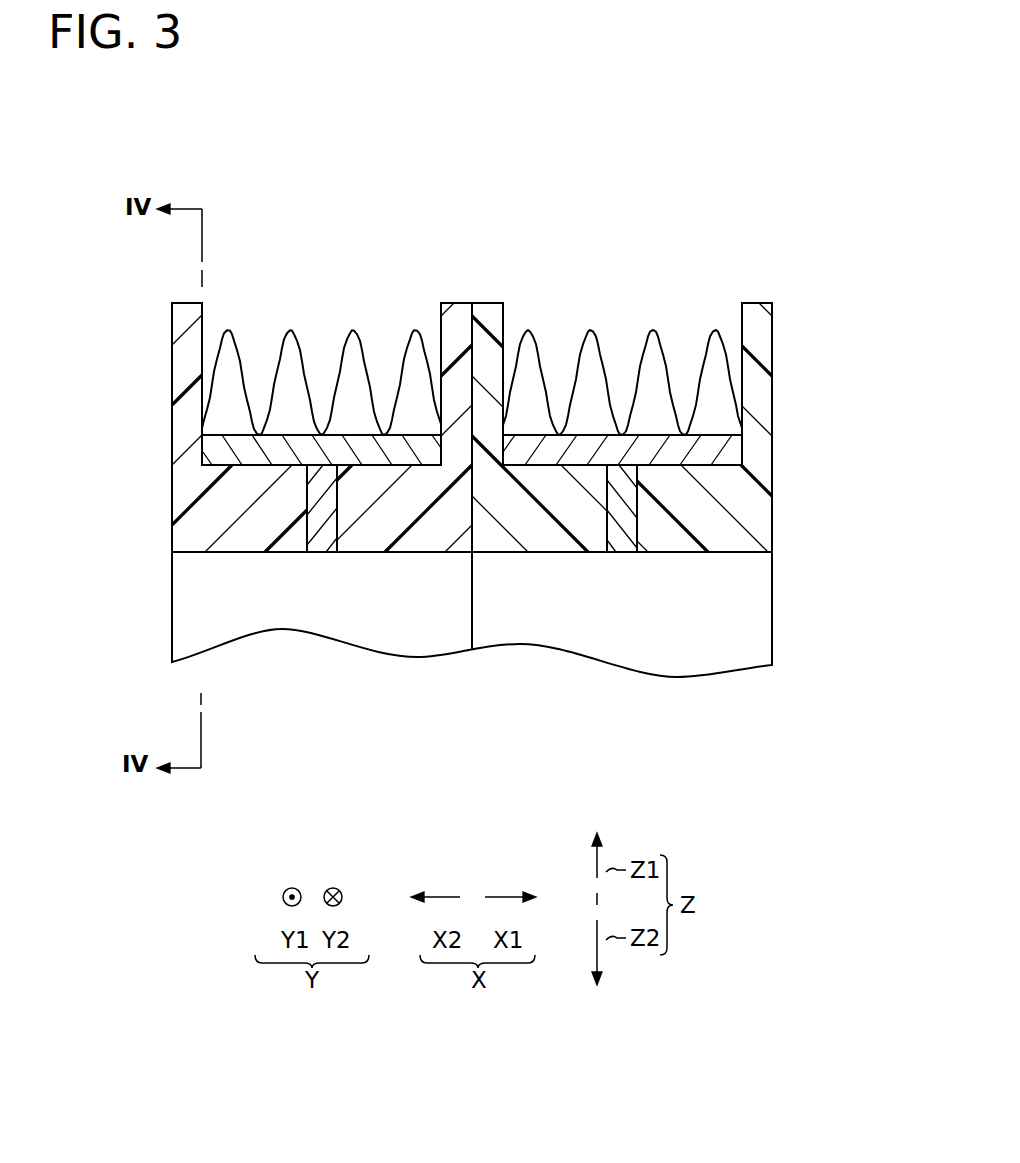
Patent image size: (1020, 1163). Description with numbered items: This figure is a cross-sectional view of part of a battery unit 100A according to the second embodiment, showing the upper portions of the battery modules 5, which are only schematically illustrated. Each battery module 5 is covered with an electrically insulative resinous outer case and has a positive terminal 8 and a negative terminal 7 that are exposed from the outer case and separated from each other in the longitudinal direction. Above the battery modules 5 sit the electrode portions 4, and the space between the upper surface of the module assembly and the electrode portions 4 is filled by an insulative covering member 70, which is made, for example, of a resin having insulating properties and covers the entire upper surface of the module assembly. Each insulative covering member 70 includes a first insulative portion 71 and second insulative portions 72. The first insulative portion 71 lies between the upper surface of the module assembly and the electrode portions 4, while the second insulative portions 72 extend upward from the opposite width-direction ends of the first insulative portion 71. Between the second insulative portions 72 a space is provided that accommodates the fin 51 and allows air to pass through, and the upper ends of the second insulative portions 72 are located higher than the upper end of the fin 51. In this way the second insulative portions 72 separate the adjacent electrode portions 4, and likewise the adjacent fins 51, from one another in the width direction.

The battery unit 100A is at (657, 202).
The insulative covering member 70 is at (90, 357).
The second insulative portion 72 is at (183, 365).
The first insulative portion 71 is at (180, 505).
The electrode portion 4 is at (733, 452).
The fin 51 is at (238, 342).
The negative terminal 7 is at (620, 498).
The positive terminal 8 is at (472, 508).
The battery module 5 is at (708, 650).